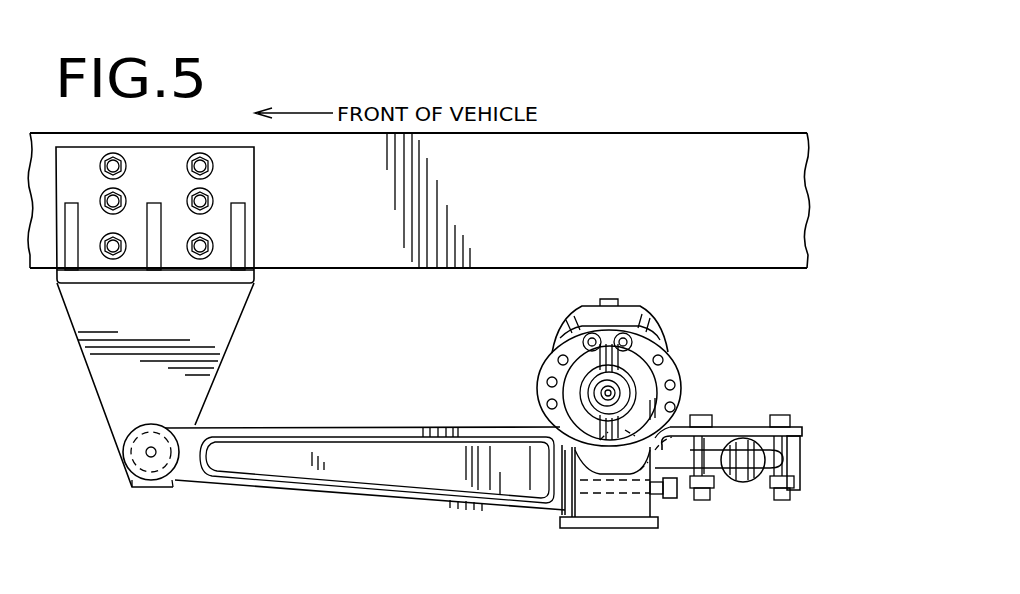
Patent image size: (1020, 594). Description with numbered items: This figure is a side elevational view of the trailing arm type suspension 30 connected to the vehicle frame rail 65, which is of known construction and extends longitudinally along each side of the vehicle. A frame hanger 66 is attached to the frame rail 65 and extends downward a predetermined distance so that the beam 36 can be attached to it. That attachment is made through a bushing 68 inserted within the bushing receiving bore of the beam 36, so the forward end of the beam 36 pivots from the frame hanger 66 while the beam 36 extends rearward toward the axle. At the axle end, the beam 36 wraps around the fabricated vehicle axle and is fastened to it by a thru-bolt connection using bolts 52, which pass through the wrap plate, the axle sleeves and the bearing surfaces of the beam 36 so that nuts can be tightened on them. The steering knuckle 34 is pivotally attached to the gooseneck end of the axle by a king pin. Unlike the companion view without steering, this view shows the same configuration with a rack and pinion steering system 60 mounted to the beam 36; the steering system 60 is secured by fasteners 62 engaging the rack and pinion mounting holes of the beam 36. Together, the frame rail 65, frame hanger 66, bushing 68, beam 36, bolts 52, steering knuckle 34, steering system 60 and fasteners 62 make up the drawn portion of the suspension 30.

The trailing arm type suspension 30 is at (706, 330).
The steering knuckle 34 is at (553, 352).
The beam 36 is at (348, 426).
The bolt 52 is at (670, 500).
The rack and pinion steering system 60 is at (740, 472).
The fastener 62 is at (705, 416).
The vehicle frame rail 65 is at (593, 146).
The frame hanger 66 is at (118, 348).
The bushing 68 is at (145, 455).